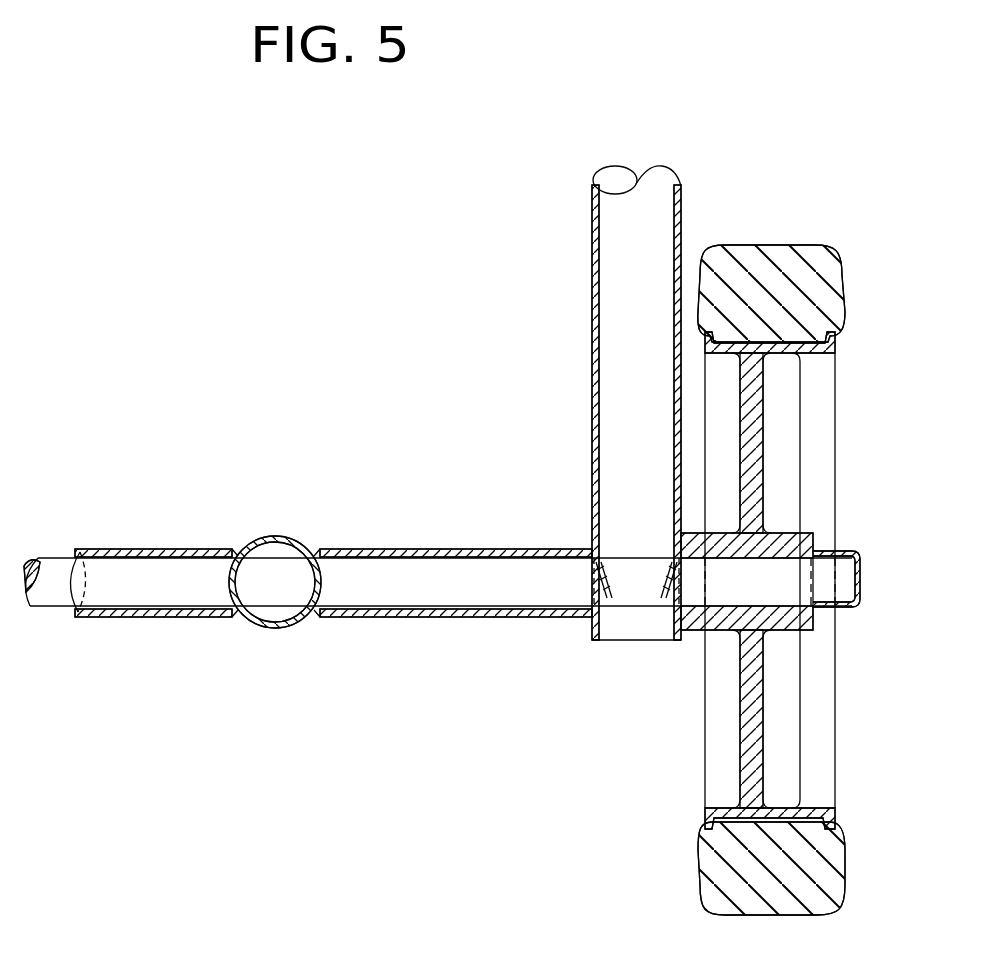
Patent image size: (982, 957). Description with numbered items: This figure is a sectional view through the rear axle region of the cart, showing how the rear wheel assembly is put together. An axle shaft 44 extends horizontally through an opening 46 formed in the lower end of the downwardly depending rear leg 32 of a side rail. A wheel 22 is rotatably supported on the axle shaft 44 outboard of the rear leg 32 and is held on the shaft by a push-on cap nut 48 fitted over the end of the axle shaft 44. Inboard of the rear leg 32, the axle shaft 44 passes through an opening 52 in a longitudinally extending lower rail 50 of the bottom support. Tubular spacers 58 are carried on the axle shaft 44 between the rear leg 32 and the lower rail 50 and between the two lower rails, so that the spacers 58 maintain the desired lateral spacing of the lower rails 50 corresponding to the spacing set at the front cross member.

The wheel 22 is at (768, 247).
The rear leg 32 is at (606, 322).
The axle shaft 44 is at (42, 568).
The opening 46 is at (668, 598).
The push-on cap nut 48 is at (855, 553).
The lower rail 50 is at (268, 630).
The opening 52 is at (237, 556).
The tubular spacer 58 is at (160, 622).